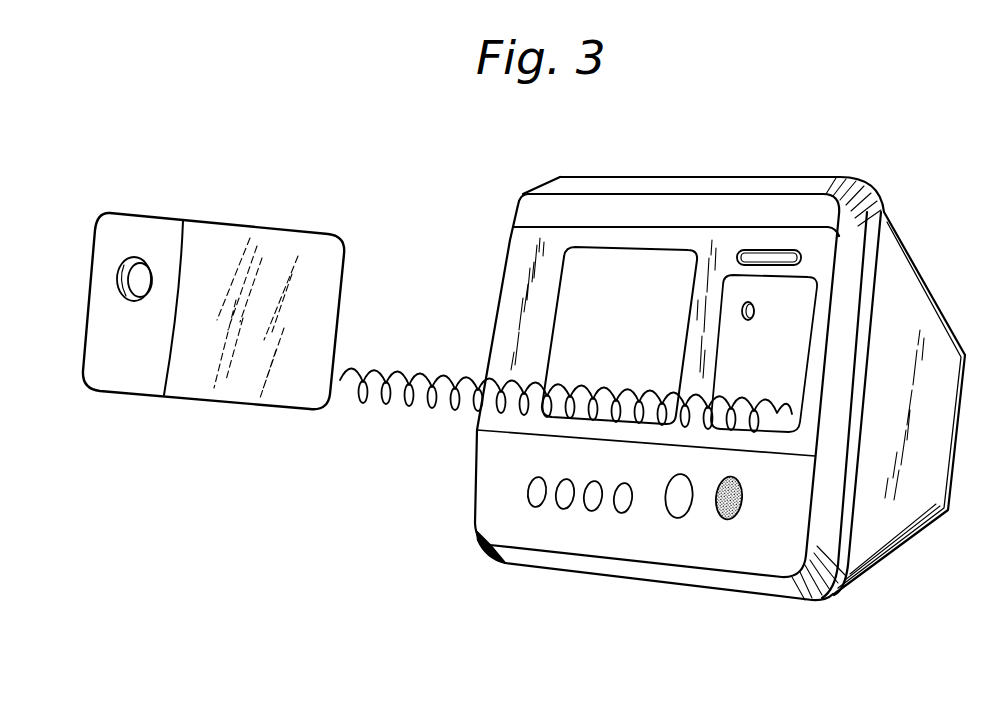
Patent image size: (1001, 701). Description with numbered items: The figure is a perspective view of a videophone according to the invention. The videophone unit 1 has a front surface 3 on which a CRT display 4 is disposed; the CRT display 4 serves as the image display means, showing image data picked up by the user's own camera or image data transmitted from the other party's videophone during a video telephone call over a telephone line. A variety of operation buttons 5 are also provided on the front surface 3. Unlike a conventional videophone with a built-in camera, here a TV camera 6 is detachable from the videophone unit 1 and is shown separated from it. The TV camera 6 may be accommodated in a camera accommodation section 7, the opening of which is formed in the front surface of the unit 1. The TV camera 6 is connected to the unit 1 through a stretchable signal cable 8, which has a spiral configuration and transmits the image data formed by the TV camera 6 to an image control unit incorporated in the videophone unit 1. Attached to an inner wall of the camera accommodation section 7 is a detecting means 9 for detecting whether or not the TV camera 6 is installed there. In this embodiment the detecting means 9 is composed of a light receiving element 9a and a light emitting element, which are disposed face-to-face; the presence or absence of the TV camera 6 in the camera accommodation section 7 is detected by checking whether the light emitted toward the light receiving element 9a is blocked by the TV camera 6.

The videophone unit 1 is at (718, 356).
The front surface 3 is at (498, 320).
The CRT display 4 is at (573, 272).
The operation buttons 5 is at (744, 525).
The TV camera 6 is at (120, 262).
The camera accommodation section 7 is at (793, 290).
The stretchable signal cable 8 is at (411, 400).
The detecting means 9 is at (850, 335).
The light receiving element 9a is at (756, 312).